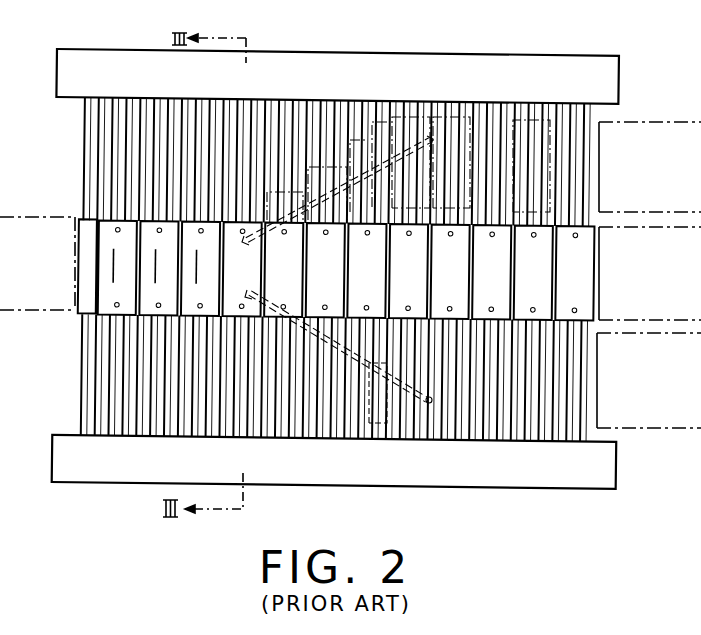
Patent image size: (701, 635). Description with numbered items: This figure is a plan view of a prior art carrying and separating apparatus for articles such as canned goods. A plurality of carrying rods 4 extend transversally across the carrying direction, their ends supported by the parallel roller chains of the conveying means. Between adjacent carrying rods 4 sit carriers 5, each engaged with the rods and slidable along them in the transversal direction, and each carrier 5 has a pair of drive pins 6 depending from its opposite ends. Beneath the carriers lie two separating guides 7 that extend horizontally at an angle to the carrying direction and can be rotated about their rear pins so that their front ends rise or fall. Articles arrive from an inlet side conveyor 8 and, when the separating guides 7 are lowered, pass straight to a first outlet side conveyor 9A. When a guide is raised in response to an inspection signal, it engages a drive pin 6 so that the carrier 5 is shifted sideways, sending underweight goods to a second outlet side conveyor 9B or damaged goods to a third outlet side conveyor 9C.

The carrying rods 4 is at (101, 407).
The carriers 5 is at (581, 113).
The drive pins 6 is at (97, 218).
The separating guides 7 is at (323, 200).
The inlet side conveyor 8 is at (37, 263).
The first outlet side conveyor 9A is at (650, 273).
The second outlet side conveyor 9B is at (650, 167).
The third outlet side conveyor 9C is at (649, 380).